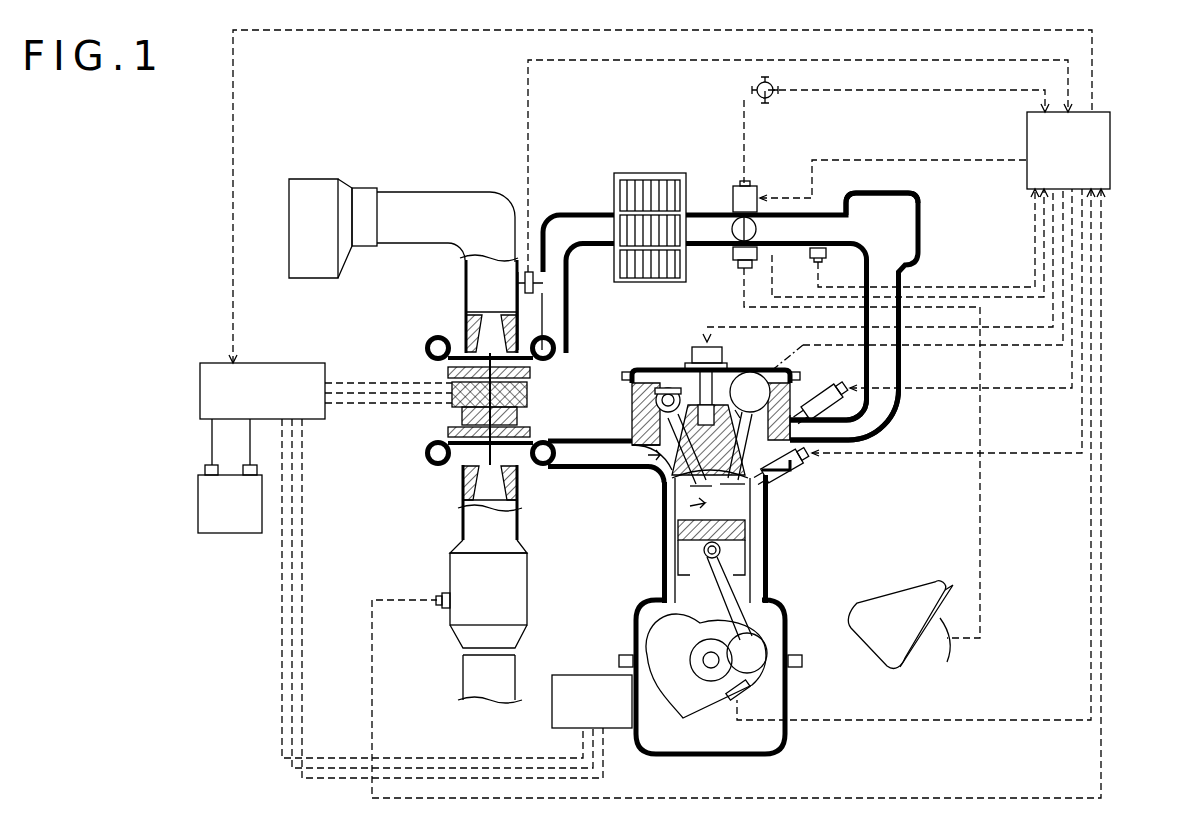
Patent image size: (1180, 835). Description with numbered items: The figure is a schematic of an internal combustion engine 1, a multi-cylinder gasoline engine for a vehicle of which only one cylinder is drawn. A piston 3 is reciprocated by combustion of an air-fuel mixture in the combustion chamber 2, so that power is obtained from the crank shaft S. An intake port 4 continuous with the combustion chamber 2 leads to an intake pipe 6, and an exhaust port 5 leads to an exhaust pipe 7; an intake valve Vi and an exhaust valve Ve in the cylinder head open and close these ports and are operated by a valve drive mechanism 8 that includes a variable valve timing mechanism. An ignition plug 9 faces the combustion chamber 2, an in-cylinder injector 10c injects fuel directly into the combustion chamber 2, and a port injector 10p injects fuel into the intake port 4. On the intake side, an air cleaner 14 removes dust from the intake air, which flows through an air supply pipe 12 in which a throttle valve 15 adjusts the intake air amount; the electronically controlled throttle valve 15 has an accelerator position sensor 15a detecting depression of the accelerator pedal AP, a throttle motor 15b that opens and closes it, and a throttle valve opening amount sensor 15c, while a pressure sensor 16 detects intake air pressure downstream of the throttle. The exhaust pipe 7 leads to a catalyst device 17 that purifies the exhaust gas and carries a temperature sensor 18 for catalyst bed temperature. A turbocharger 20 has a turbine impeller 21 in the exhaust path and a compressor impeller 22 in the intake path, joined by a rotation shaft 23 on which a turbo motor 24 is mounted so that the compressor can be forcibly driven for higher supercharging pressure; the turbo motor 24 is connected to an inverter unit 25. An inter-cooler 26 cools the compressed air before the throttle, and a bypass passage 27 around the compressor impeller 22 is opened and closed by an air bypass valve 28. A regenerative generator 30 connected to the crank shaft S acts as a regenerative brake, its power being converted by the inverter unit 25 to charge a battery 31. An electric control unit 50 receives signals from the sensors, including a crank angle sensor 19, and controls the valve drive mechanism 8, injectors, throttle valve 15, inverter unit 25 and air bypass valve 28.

The internal combustion engine 1 is at (741, 554).
The combustion chamber 2 is at (665, 517).
The piston 3 is at (745, 560).
The intake port 4 is at (762, 472).
The exhaust port 5 is at (660, 440).
The intake pipe 6 is at (900, 398).
The exhaust pipe 7 is at (572, 452).
The valve drive mechanism 8 is at (767, 400).
The ignition plug 9 is at (905, 232).
The port injector 10p is at (852, 410).
The in-cylinder injector 10c is at (812, 460).
The air supply pipe 12 is at (846, 210).
The air cleaner 14 is at (308, 268).
The throttle valve 15 is at (735, 228).
The accelerator position sensor 15a is at (735, 256).
The throttle motor 15b is at (757, 196).
The throttle valve opening amount sensor 15c is at (762, 98).
The pressure sensor 16 is at (816, 258).
The catalyst device 17 is at (455, 615).
The temperature sensor 18 is at (442, 598).
The crank angle sensor 19 is at (745, 690).
The turbocharger 20 is at (472, 400).
The turbine impeller 21 is at (463, 470).
The compressor impeller 22 is at (465, 340).
The rotation shaft 23 is at (452, 420).
The turbo motor 24 is at (527, 398).
The inverter unit 25 is at (200, 390).
The inter-cooler 26 is at (661, 268).
The bypass passage 27 is at (466, 282).
The air bypass valve 28 is at (533, 283).
The regenerative generator 30 is at (595, 675).
The battery 31 is at (198, 503).
The electric control unit 50 is at (1113, 152).
The crank shaft S is at (718, 660).
The accelerator pedal AP is at (913, 655).
The exhaust valve Ve is at (658, 488).
The intake valve Vi is at (733, 497).